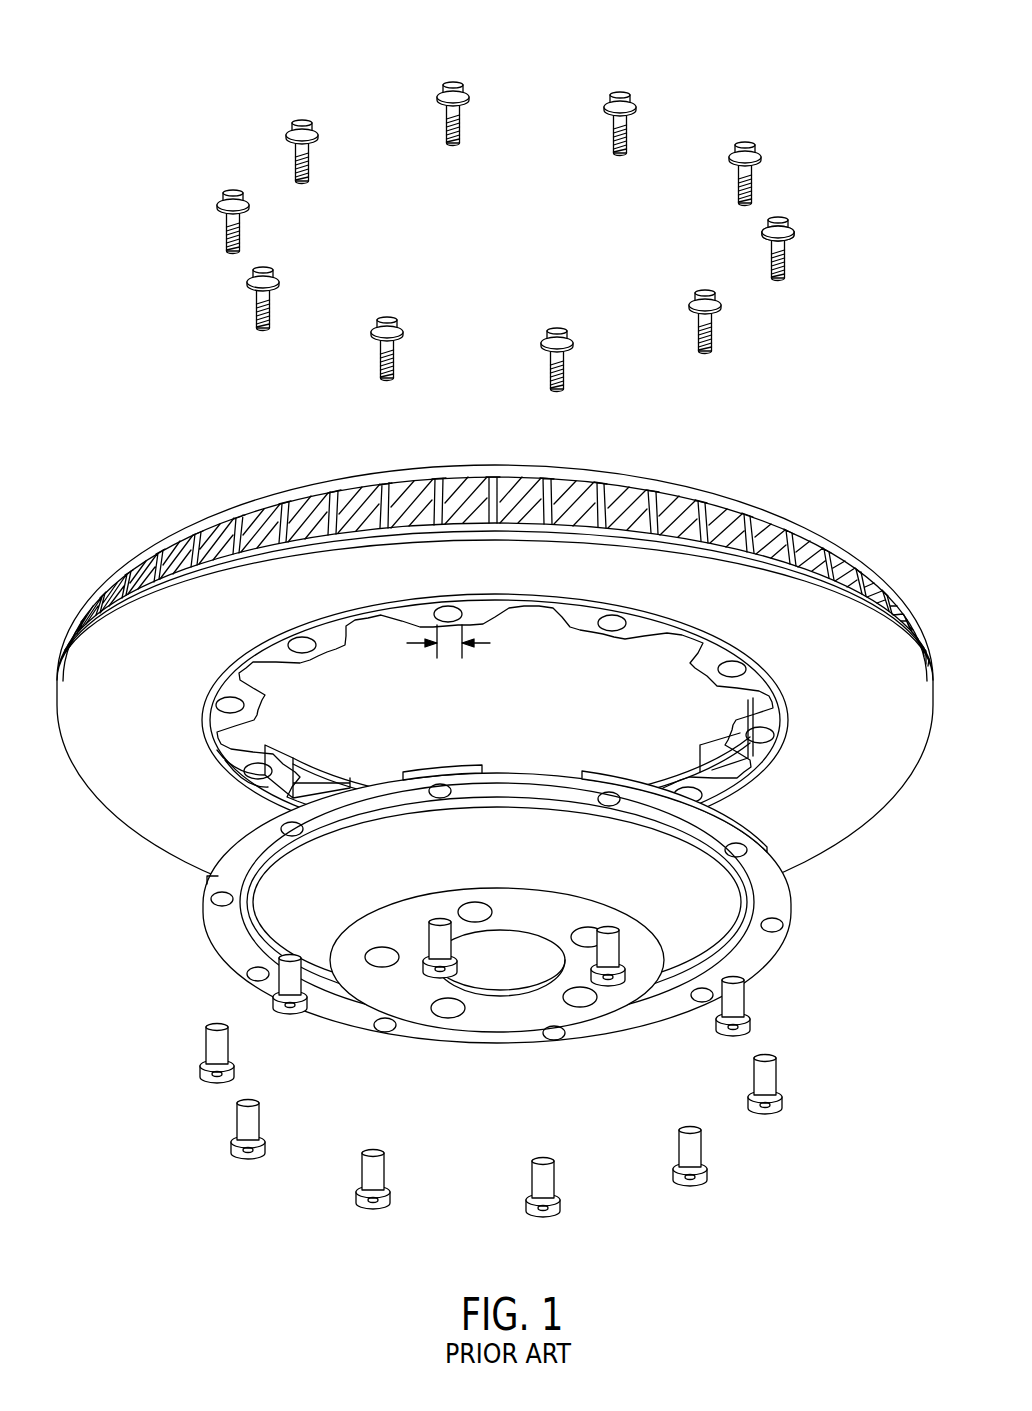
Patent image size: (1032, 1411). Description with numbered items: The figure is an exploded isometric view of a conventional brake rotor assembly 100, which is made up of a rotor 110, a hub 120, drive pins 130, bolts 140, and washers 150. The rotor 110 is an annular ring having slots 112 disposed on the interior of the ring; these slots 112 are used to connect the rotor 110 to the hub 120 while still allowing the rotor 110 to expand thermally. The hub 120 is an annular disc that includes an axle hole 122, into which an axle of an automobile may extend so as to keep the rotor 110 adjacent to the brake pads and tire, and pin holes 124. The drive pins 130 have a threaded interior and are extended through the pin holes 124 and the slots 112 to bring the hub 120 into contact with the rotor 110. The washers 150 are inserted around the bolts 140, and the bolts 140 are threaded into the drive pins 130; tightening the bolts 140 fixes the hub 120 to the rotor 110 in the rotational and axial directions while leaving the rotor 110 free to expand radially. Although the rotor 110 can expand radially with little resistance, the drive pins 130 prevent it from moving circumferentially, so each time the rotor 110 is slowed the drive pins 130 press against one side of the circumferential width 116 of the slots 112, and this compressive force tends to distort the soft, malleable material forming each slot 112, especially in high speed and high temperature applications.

The brake rotor assembly 100 is at (495, 622).
The rotor 110 is at (495, 673).
The slot 112 is at (323, 653).
The circumferential width 116 is at (490, 643).
The hub 120 is at (495, 958).
The axle hole 122 is at (501, 947).
The pin hole 124 is at (207, 897).
The drive pin 130 is at (787, 1072).
The bolt 140 is at (771, 265).
The washer 150 is at (805, 205).